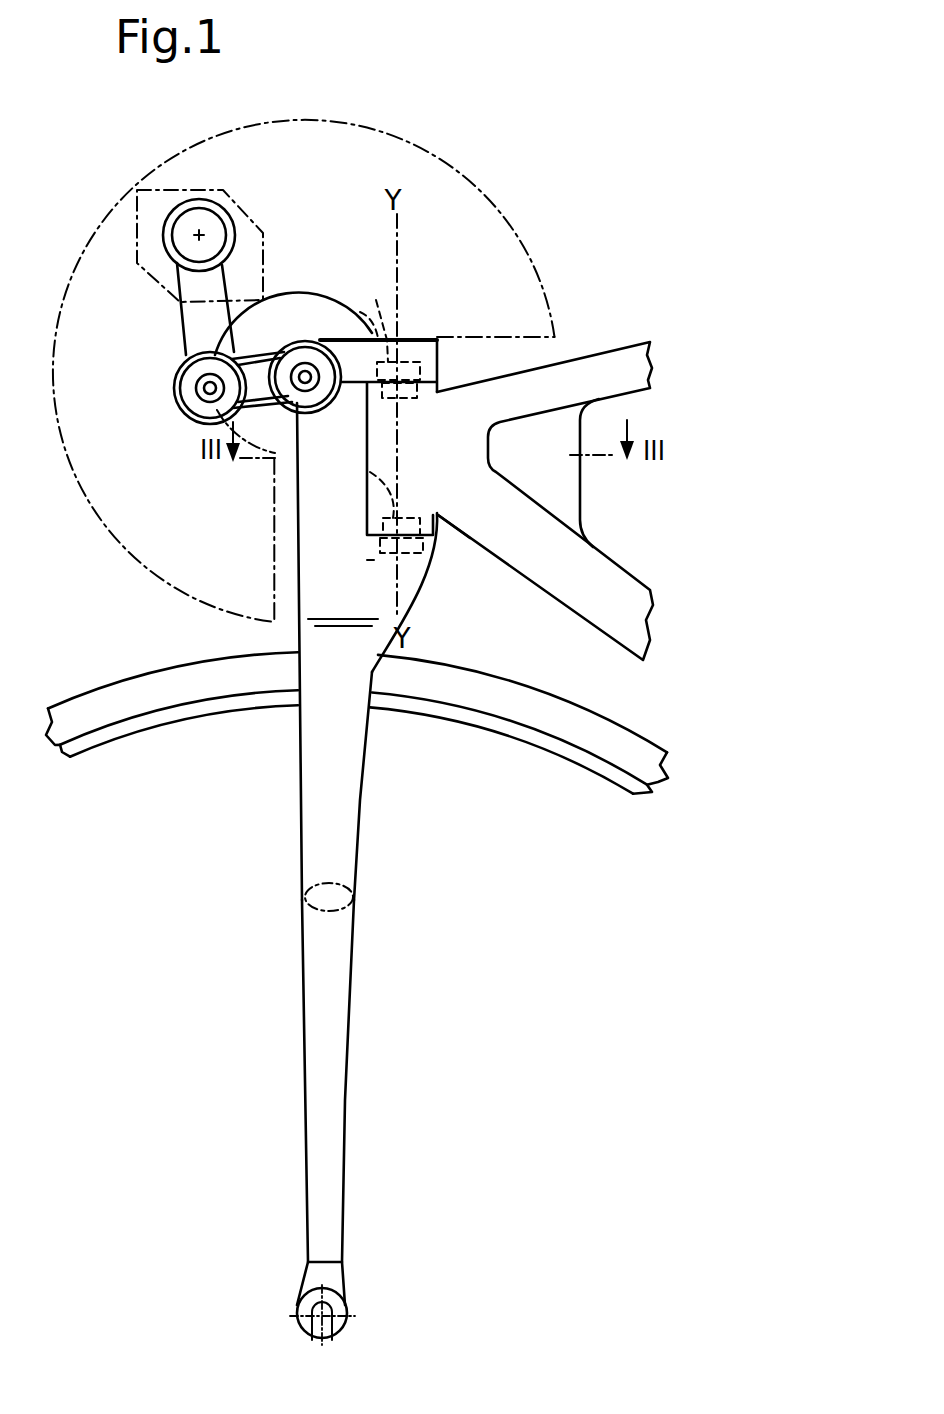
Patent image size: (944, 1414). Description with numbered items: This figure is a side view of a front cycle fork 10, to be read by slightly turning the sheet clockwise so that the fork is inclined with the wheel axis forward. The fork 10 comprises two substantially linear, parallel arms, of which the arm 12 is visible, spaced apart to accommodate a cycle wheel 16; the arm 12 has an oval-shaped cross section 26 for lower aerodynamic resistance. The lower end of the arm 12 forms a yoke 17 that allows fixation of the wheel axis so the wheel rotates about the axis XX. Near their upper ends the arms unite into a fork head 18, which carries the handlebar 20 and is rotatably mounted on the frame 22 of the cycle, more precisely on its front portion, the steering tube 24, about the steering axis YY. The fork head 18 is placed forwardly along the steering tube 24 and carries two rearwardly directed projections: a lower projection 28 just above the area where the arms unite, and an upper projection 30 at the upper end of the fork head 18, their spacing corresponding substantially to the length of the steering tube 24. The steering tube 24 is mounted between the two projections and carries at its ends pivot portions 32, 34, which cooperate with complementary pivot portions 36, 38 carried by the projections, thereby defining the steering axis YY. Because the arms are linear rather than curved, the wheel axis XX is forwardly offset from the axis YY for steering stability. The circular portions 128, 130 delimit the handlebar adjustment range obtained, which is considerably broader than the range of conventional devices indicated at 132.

The fork 10 is at (297, 818).
The arm 12 is at (337, 1140).
The cycle wheel 16 is at (505, 712).
The yoke 17 is at (297, 1310).
The fork head 18 is at (303, 513).
The handlebar 20 is at (218, 221).
The frame 22 is at (632, 339).
The steering tube 24 is at (439, 516).
The oval-shaped cross section 26 is at (360, 874).
The lower projection 28 is at (418, 567).
The upper projection 30 is at (428, 350).
The pivot portion 32 is at (372, 474).
The pivot portion 34 is at (415, 398).
The complementary pivot portion 36 is at (388, 550).
The complementary pivot portion 38 is at (371, 315).
The circular portion 128 is at (547, 282).
The circular portion 130 is at (335, 293).
The range of conventional devices 132 is at (170, 302).